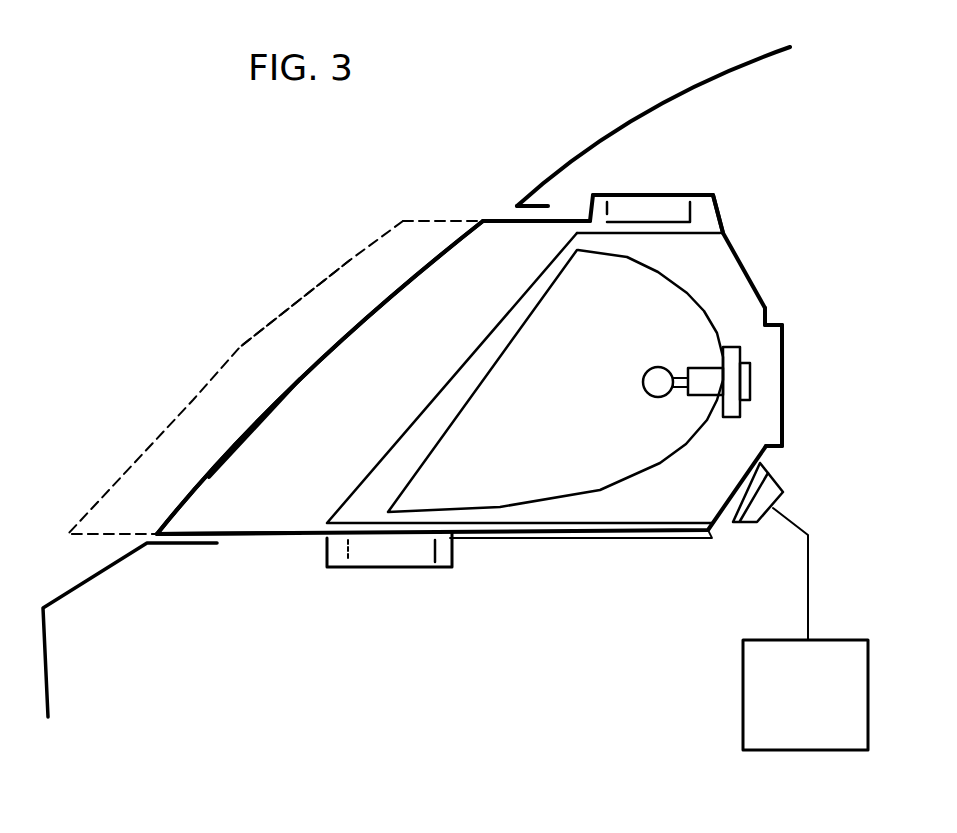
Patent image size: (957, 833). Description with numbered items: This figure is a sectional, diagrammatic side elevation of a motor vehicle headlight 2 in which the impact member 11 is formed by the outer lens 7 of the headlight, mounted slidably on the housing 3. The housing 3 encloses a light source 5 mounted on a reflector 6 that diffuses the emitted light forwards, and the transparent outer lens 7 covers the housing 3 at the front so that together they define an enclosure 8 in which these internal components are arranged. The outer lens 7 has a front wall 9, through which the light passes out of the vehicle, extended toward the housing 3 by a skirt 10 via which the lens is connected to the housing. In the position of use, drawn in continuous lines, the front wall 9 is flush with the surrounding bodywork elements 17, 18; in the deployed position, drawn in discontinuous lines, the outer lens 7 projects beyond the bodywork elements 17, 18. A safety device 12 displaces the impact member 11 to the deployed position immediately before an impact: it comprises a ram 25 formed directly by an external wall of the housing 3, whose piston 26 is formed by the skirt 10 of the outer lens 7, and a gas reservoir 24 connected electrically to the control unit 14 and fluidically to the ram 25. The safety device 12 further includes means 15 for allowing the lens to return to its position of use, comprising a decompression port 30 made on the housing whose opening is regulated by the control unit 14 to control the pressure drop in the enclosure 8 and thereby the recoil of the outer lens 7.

The headlight 2 is at (299, 636).
The housing 3 is at (750, 272).
The light source 5 is at (658, 367).
The reflector 6 is at (560, 497).
The outer lens 7 is at (298, 377).
The enclosure 8 is at (410, 367).
The front wall 9 is at (150, 443).
The skirt 10 is at (493, 218).
The impact member 11 is at (295, 303).
The safety device 12 is at (400, 596).
The control unit 14 is at (818, 711).
The means for allowing displacement 15 is at (773, 318).
The bodywork element 17 is at (70, 588).
The bodywork element 18 is at (637, 120).
The gas reservoir 24 is at (752, 513).
The ram 25 is at (692, 188).
The piston 26 is at (610, 208).
The decompression port 30 is at (770, 452).